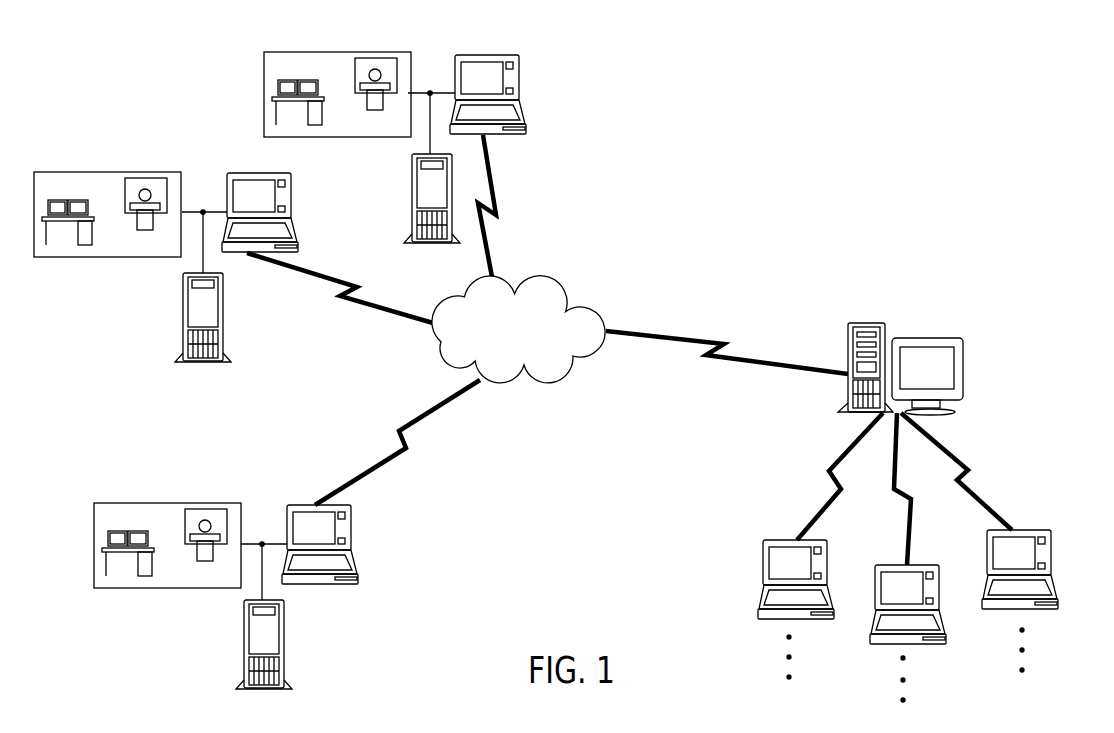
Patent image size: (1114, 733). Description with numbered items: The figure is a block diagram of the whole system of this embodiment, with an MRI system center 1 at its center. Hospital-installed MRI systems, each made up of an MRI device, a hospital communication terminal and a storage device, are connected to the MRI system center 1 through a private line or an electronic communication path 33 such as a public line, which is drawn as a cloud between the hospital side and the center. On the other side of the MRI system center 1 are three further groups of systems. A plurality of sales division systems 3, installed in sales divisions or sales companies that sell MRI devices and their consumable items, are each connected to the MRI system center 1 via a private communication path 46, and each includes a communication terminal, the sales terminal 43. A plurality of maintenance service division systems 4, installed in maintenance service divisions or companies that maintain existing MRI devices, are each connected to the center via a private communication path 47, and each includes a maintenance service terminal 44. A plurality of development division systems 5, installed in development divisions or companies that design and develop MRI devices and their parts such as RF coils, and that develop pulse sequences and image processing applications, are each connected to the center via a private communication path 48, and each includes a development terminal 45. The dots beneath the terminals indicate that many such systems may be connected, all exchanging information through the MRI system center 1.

The MRI system center 1 is at (955, 314).
The electronic communication path 33 is at (578, 373).
The sales division system 3 is at (796, 609).
The maintenance service division system 4 is at (905, 633).
The development division system 5 is at (1031, 601).
The communication terminal (sales terminal) 43 is at (829, 551).
The communication terminal (maintenance service terminal) 44 is at (940, 577).
The communication terminal (development terminal) 45 is at (1053, 543).
The private communication path 46 is at (853, 465).
The private communication path 47 is at (903, 477).
The private communication path 48 is at (962, 467).